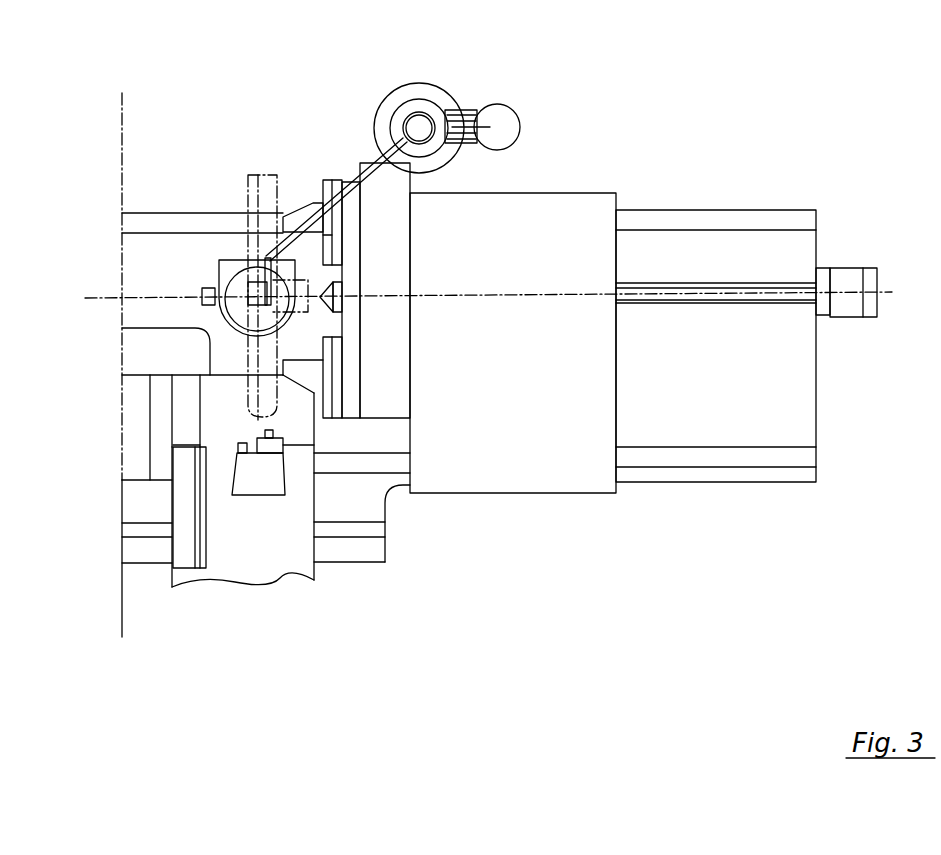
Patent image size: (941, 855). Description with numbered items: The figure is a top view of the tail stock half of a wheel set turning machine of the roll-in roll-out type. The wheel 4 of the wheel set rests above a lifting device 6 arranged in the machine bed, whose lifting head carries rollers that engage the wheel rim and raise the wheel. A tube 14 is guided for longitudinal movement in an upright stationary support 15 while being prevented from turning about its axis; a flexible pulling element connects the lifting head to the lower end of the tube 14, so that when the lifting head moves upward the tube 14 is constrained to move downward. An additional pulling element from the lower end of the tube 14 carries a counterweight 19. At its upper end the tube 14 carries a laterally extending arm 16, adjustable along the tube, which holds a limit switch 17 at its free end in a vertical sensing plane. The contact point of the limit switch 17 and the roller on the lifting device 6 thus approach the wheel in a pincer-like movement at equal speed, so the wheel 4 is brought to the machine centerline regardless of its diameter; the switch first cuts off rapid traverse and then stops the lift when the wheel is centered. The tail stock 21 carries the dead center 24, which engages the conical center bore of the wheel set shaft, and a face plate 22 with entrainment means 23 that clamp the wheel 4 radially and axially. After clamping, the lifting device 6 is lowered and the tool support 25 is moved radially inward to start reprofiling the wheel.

The wheel 4 is at (248, 183).
The lifting device 6 is at (237, 305).
The tube 14 is at (405, 118).
The upright stationary support 15 is at (445, 88).
The laterally extending arm 16 is at (360, 180).
The limit switch 17 is at (250, 292).
The counterweight 19 is at (507, 118).
The tail stock 21 is at (523, 462).
The face plate 22 is at (382, 355).
The entrainment means 23 is at (303, 212).
The dead center 24 is at (336, 296).
The tool support 25 is at (257, 562).